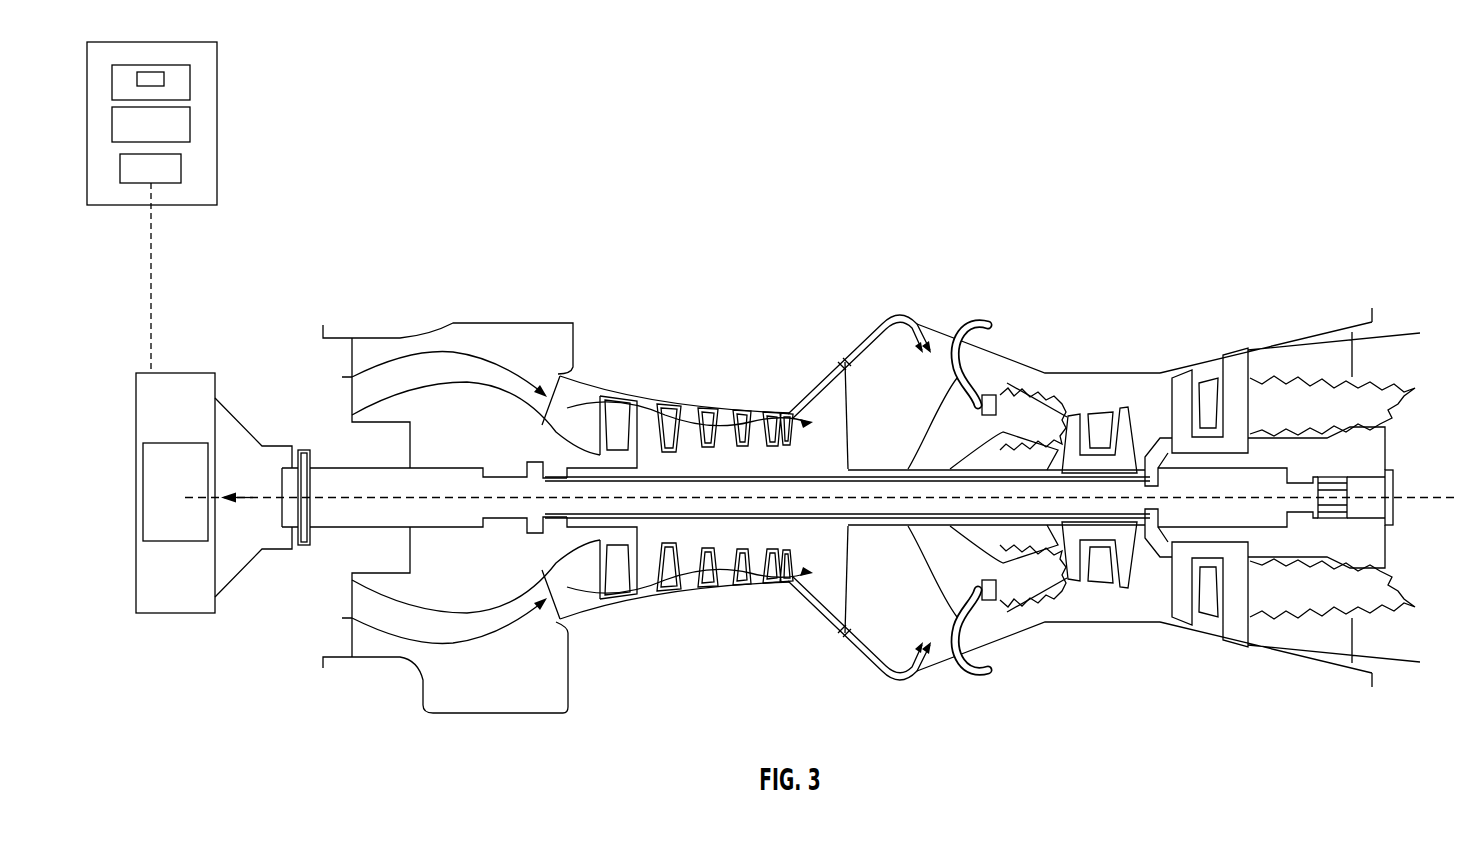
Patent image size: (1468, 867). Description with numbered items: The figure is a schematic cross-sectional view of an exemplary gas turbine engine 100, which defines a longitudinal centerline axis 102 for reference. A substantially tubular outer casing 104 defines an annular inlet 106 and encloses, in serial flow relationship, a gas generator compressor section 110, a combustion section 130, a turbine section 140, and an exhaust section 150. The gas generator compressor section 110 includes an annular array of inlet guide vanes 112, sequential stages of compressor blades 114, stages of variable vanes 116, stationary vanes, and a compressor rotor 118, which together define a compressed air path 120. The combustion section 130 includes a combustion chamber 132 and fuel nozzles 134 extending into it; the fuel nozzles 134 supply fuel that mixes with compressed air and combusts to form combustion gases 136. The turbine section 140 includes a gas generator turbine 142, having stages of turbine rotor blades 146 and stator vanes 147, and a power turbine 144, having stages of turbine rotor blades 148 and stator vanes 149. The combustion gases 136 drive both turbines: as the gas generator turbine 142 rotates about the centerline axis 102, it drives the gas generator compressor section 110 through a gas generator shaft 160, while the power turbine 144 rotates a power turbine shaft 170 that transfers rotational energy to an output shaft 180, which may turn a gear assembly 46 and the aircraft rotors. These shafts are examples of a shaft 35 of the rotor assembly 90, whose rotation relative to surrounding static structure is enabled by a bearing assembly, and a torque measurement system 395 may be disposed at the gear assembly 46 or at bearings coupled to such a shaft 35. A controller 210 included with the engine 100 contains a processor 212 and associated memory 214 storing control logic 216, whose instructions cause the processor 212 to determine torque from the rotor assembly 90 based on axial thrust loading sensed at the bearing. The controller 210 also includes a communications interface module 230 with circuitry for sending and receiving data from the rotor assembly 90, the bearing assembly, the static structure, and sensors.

The controller 210 is at (108, 42).
The processor 212 is at (180, 127).
The memory 214 is at (190, 84).
The control logic 216 is at (157, 76).
The communications interface module 230 is at (172, 168).
The gear assembly 46 is at (188, 366).
The centerline axis 102 is at (206, 489).
The torque measurement system 395 is at (143, 528).
The output shaft 180 is at (318, 476).
The shaft 35 is at (445, 468).
The rotor assembly 90 is at (678, 471).
The gas turbine engine 100 is at (348, 705).
The annular inlet 106 is at (357, 355).
The outer casing 104 is at (662, 396).
The gas generator compressor section 110 is at (671, 596).
The inlet guide vanes 112 is at (622, 597).
The compressor blades 114 is at (655, 430).
The variable vanes 116 is at (710, 578).
The compressor rotor 118 is at (817, 600).
The compressed air path 120 is at (575, 450).
The combustion section 130 is at (946, 615).
The combustion chamber 132 is at (1008, 380).
The fuel nozzles 134 is at (1006, 388).
The combustion gases 136 is at (1005, 578).
The turbine section 140 is at (1190, 719).
The gas generator turbine 142 is at (1138, 578).
The power turbine 144 is at (1255, 380).
The turbine rotor blades 146 is at (1069, 414).
The stator vanes 147 is at (1110, 408).
The turbine rotor blades 148 is at (1183, 387).
The stator vanes 149 is at (1212, 388).
The exhaust section 150 is at (1343, 669).
The gas generator shaft 160 is at (875, 461).
The power turbine shaft 170 is at (1258, 510).